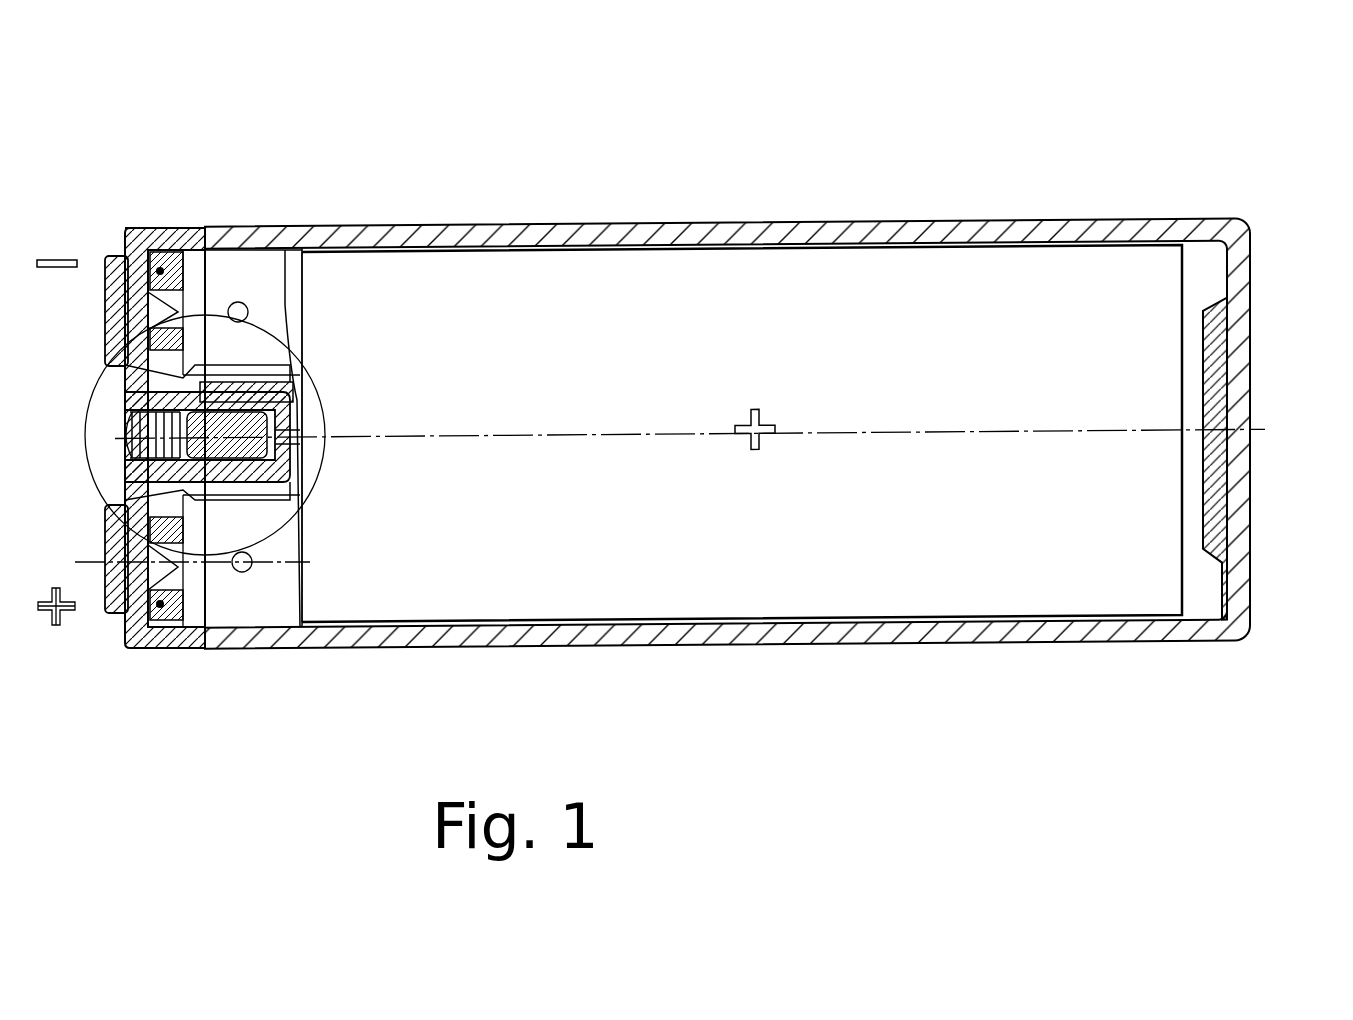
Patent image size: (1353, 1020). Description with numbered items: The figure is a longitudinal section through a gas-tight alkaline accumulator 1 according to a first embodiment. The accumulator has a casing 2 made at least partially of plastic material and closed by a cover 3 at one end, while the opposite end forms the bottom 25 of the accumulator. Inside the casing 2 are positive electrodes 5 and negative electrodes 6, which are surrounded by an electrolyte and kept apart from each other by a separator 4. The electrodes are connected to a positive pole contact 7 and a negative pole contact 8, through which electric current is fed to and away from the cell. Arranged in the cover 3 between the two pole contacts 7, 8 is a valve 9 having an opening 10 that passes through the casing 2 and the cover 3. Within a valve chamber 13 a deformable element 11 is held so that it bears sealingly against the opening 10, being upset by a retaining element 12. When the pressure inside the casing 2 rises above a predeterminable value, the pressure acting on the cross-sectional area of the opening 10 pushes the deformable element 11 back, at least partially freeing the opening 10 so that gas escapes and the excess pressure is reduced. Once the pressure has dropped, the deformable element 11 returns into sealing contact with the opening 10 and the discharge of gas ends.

The accumulator 1 is at (968, 224).
The casing 2 is at (1143, 230).
The cover 3 is at (127, 228).
The separator 4 is at (294, 262).
The positive electrodes 5 is at (650, 285).
The negative electrodes 6 is at (800, 241).
The positive pole contact 7 is at (108, 530).
The negative pole contact 8 is at (108, 306).
The valve 9 is at (114, 420).
The opening 10 is at (294, 436).
The deformable element 11 is at (234, 462).
The retaining element 12 is at (130, 440).
The valve chamber 13 is at (205, 388).
The bottom 25 is at (1213, 380).